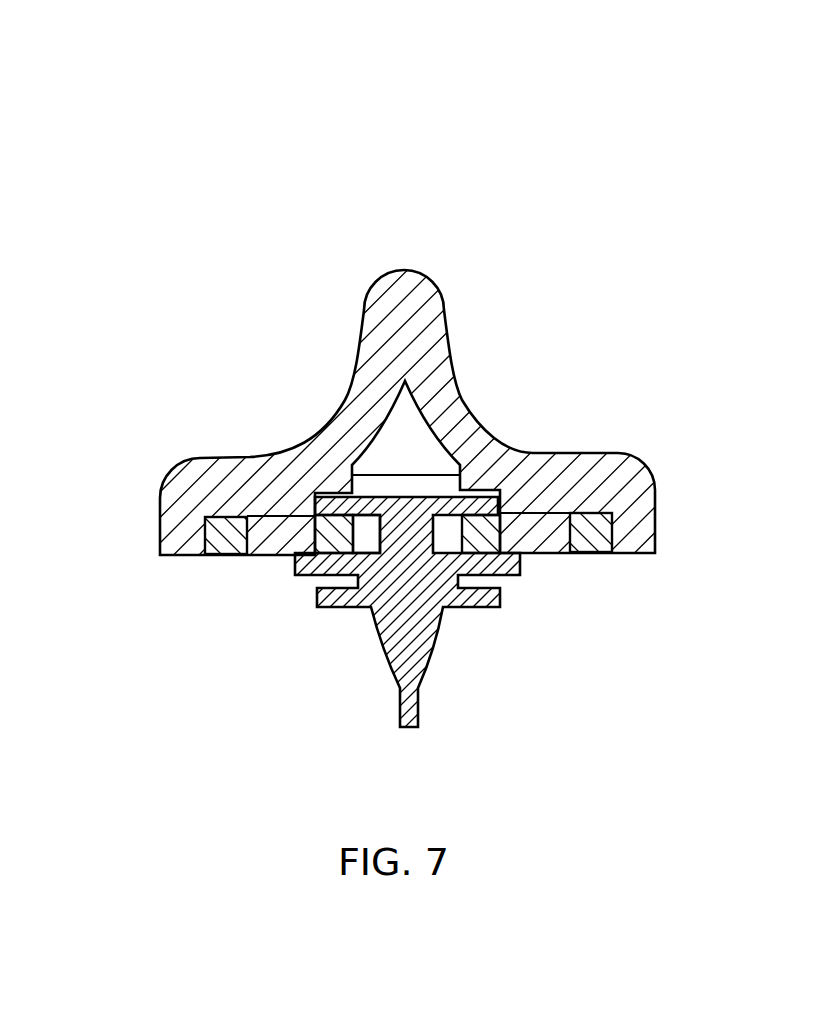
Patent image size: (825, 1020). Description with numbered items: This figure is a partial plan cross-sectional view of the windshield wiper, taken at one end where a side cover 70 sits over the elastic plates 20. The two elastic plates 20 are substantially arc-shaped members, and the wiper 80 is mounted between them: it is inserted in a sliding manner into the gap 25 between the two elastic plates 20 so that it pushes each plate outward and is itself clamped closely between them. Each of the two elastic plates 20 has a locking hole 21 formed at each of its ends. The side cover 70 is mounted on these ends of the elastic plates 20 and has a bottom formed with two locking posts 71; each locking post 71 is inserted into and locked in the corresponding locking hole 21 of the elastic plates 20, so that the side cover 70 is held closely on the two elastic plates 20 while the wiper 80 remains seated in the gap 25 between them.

The side cover 70 is at (412, 413).
The locking post 71 is at (540, 530).
The elastic plate 20 is at (207, 552).
The locking hole 21 is at (575, 524).
The gap 25 is at (363, 530).
The wiper 80 is at (446, 645).